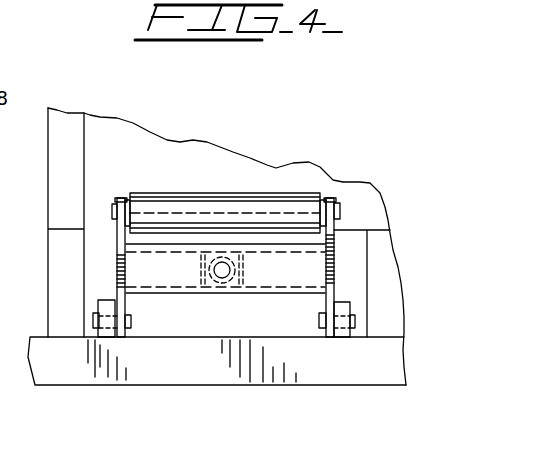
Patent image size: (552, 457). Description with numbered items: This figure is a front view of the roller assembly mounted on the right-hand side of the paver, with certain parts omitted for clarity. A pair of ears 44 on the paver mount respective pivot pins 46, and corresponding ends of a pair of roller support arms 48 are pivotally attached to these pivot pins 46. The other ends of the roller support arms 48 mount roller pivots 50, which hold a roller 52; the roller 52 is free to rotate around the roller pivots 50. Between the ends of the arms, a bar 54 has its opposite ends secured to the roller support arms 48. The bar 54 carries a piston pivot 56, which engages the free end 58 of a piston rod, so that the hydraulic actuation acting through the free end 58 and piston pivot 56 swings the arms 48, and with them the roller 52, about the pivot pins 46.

The ears 44 is at (110, 338).
The pivot pins 46 is at (92, 317).
The roller support arms 48 is at (118, 250).
The roller pivots 50 is at (112, 212).
The roller 52 is at (172, 193).
The bar 54 is at (165, 245).
The piston pivot 56 is at (197, 275).
The free end of piston rod 58 is at (226, 258).